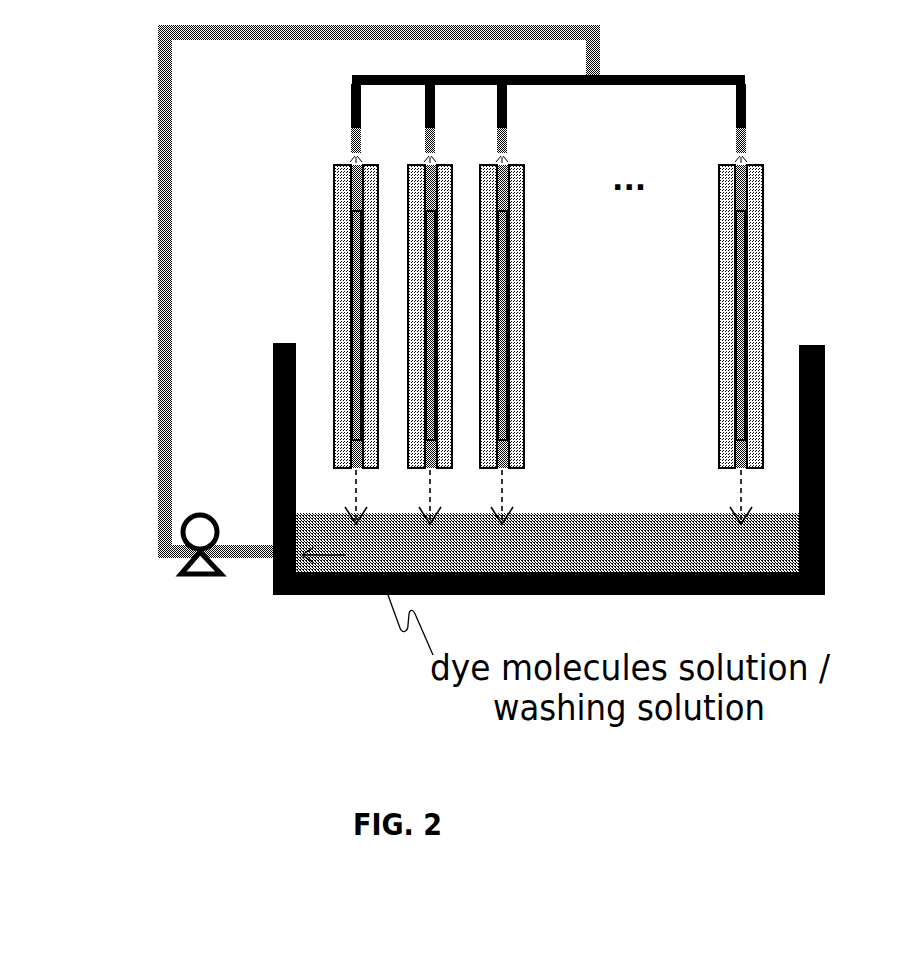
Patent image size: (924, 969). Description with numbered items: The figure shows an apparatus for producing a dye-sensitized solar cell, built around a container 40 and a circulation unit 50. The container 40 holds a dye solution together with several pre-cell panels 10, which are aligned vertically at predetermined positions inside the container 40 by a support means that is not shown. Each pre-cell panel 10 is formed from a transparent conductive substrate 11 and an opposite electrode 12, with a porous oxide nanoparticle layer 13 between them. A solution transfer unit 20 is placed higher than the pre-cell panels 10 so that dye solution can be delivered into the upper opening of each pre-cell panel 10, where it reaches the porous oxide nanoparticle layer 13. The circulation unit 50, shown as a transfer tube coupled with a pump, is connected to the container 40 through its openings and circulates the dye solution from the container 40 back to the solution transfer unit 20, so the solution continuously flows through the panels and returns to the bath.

The pre-cell panel 10 is at (742, 316).
The transparent conductive substrate 11 is at (727, 316).
The opposite electrode 12 is at (755, 267).
The porous oxide nanoparticle layer 13 is at (735, 407).
The solution transfer unit 20 is at (767, 73).
The container 40 is at (846, 500).
The circulation unit 50 is at (130, 468).